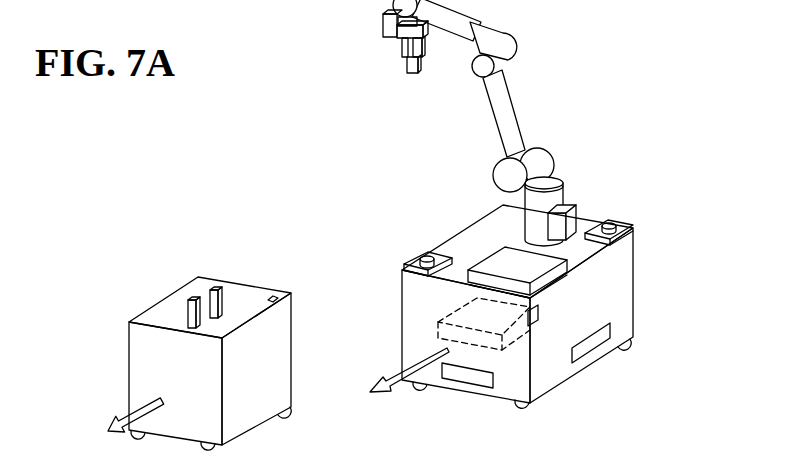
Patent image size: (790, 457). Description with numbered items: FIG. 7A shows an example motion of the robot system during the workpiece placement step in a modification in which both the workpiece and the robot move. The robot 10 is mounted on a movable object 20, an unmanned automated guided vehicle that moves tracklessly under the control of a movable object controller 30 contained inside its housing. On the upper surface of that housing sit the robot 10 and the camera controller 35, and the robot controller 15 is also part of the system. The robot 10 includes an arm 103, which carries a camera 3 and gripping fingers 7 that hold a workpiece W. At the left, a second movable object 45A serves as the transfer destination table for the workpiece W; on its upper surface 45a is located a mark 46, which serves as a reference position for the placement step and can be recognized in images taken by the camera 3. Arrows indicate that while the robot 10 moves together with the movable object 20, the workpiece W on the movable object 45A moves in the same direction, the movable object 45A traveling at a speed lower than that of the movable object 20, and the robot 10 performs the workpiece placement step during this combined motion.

The camera 3 is at (383, 22).
The gripping fingers 7 is at (403, 48).
The workpiece W is at (410, 68).
The arm 103 is at (496, 121).
The robot 10 is at (401, 164).
The robot controller 15 is at (577, 213).
The movable object 20 is at (543, 292).
The camera controller 35 is at (551, 280).
The movable object controller 30 is at (520, 334).
The upper surface 45a is at (166, 312).
The mark 46 is at (273, 297).
The movable object 45A is at (177, 345).